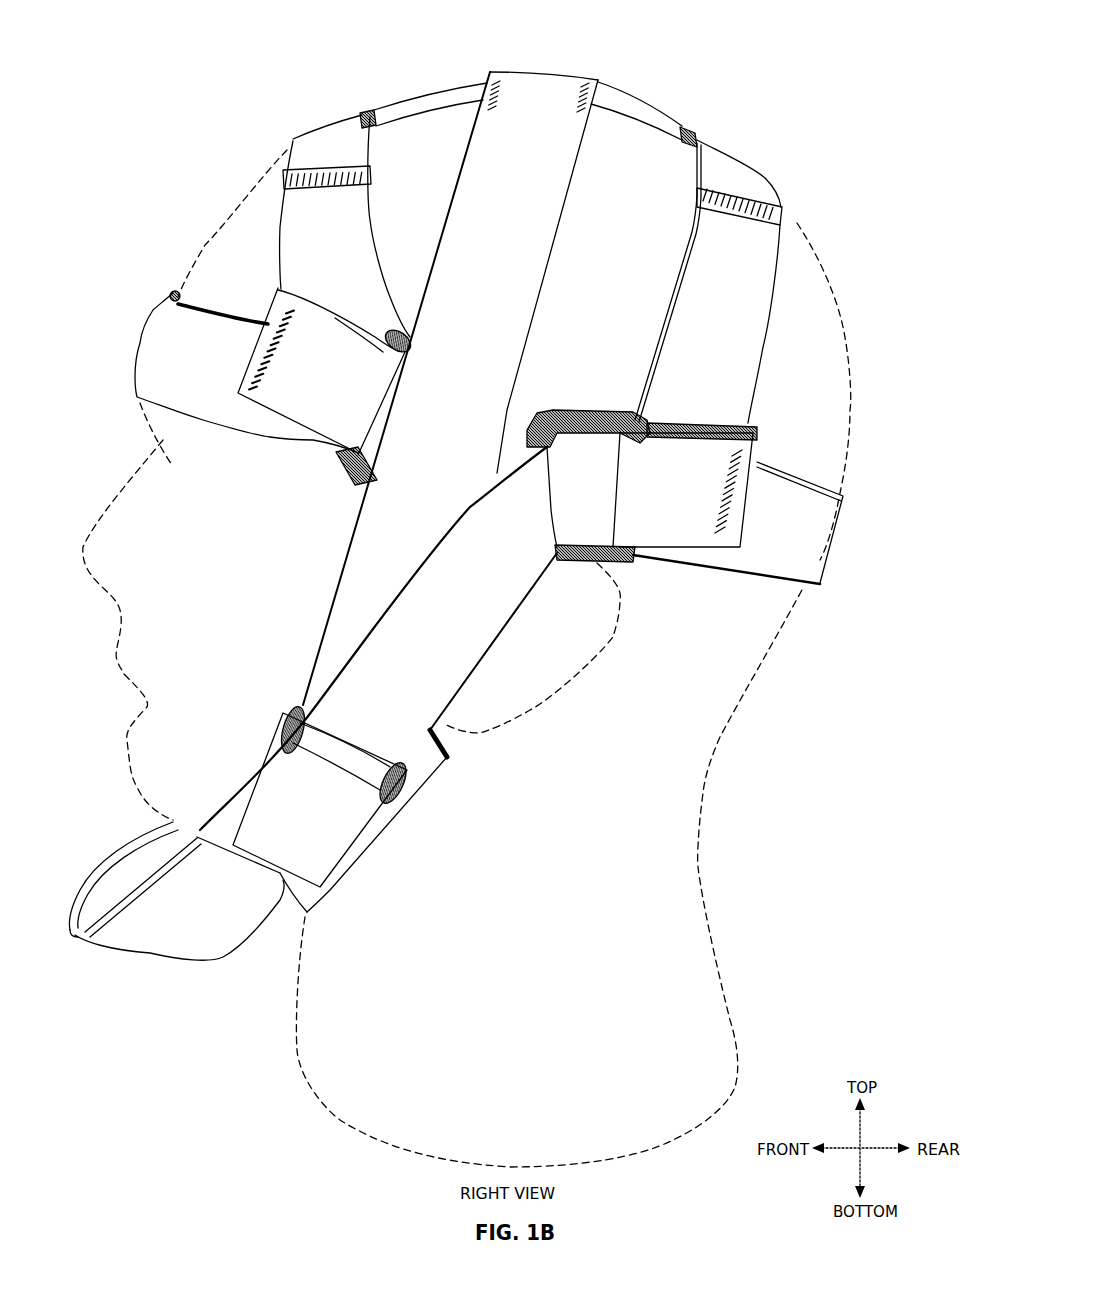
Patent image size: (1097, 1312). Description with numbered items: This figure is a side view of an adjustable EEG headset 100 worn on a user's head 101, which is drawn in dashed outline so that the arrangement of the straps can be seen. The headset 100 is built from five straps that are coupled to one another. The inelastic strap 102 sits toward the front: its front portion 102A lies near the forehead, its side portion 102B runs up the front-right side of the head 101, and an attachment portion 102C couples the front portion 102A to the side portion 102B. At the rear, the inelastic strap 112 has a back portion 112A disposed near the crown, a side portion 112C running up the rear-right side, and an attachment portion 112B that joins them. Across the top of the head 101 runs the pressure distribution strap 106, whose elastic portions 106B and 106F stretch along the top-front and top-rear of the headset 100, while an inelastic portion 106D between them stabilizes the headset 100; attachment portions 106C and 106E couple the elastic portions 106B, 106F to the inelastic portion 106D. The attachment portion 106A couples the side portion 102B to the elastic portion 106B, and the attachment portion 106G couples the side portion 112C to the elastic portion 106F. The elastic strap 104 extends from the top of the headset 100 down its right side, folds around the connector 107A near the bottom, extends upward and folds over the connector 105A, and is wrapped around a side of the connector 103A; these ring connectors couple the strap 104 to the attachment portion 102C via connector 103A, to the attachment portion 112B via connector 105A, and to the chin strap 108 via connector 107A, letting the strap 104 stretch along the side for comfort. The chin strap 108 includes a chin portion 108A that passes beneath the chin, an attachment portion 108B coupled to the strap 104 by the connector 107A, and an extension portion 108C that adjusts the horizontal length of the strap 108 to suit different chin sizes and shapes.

The adjustable EEG headset 100 is at (127, 83).
The user's head 101 is at (193, 248).
The strap 102 is at (127, 293).
The front portion 102A is at (127, 357).
The side portion 102B is at (280, 230).
The attachment portion 102C is at (273, 303).
The connector 103A is at (347, 477).
The strap 104 is at (540, 77).
The connector 105A is at (570, 410).
The strap 106 is at (310, 147).
The attachment portion 106A is at (278, 175).
The elastic portion 106B is at (330, 123).
The attachment portion 106C is at (367, 110).
The inelastic portion 106D is at (460, 90).
The attachment portion 106E is at (687, 127).
The elastic portion 106F is at (733, 158).
The attachment portion 106G is at (790, 212).
The connector 107A is at (407, 787).
The strap 108 is at (200, 827).
The chin portion 108A is at (243, 773).
The attachment portion 108B is at (360, 840).
The extension portion 108C is at (153, 960).
The strap 112 is at (817, 590).
The back portion 112A is at (837, 533).
The attachment portion 112B is at (727, 422).
The side portion 112C is at (765, 350).